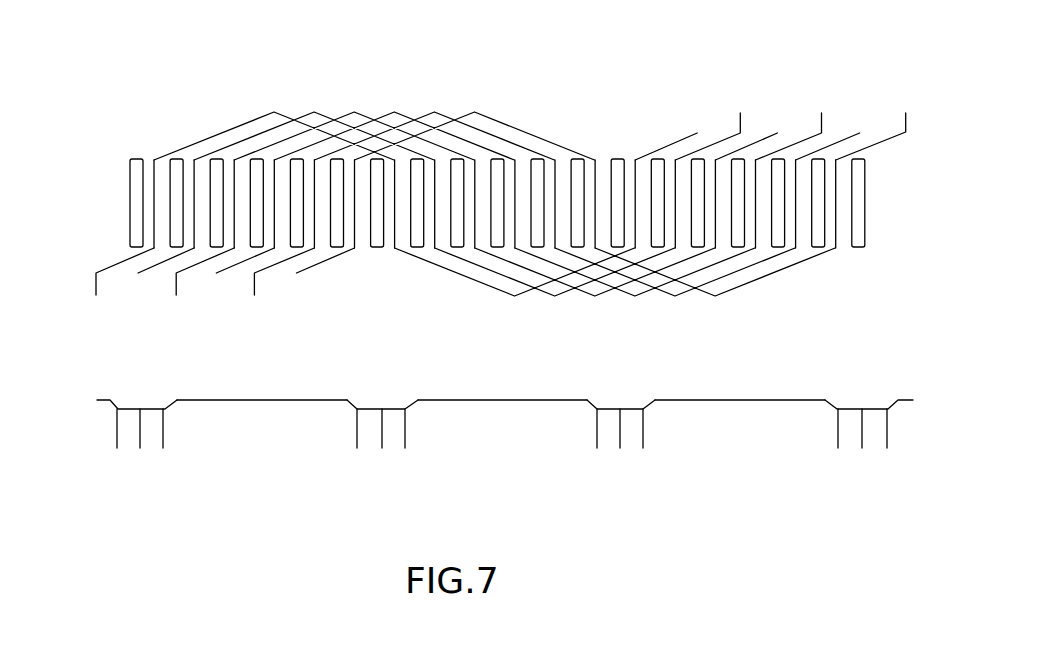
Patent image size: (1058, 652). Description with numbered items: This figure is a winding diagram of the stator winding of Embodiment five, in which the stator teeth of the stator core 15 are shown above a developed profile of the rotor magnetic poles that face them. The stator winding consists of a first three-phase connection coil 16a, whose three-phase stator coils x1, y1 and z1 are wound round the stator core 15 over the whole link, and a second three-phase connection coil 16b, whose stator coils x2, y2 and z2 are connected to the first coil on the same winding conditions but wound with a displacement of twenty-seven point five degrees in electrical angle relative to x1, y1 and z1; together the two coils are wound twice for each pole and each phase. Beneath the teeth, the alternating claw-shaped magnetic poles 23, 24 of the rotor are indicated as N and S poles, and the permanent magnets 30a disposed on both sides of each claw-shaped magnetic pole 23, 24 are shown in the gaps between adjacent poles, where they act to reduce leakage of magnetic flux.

The stator core 15 is at (615, 157).
The first three-phase connection coil 16a is at (263, 325).
The second three-phase connection coil 16b is at (912, 76).
The claw-shaped magnetic pole 23 is at (230, 438).
The claw-shaped magnetic pole 24 is at (534, 442).
The permanent magnet 30a is at (400, 443).